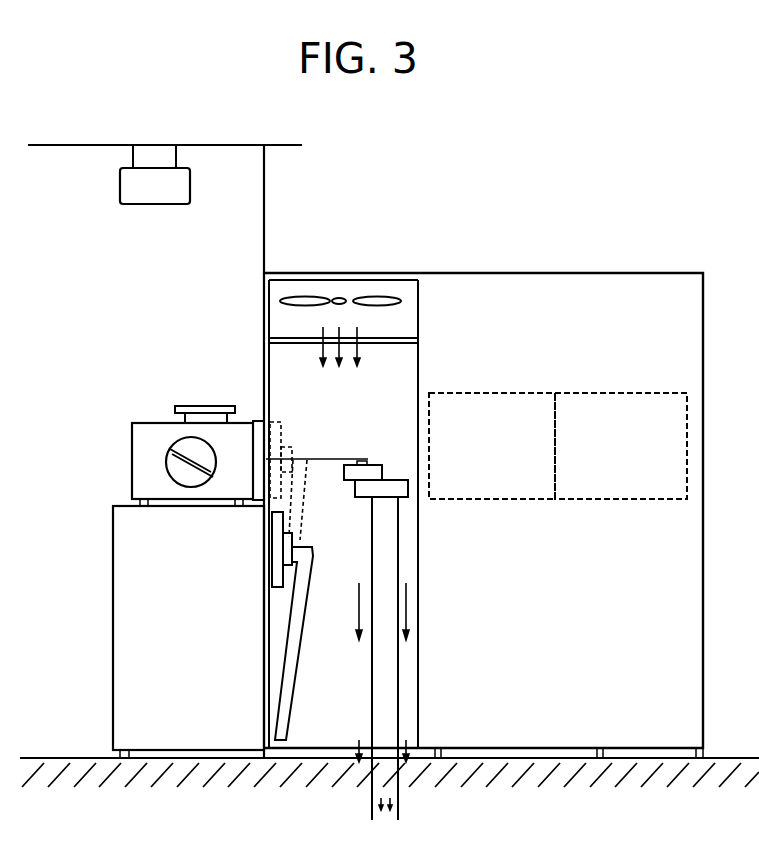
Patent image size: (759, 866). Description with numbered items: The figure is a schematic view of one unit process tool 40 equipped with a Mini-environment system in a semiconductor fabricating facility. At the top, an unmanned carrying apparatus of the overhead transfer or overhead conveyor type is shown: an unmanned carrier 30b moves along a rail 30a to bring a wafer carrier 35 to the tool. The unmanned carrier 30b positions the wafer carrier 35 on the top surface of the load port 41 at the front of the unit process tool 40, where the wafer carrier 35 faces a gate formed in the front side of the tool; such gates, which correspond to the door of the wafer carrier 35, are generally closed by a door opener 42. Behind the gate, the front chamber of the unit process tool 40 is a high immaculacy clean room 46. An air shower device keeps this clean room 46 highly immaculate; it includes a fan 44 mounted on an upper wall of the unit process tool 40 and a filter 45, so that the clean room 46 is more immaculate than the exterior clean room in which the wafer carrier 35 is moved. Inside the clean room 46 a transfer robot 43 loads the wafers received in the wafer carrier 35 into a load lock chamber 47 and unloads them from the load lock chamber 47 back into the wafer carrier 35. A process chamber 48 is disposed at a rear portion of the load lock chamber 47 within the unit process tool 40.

The rail 30a is at (77, 145).
The unmanned carrier 30b is at (120, 186).
The wafer carrier 35 is at (140, 421).
The unit process tool 40 is at (395, 170).
The load port 41 is at (113, 575).
The door opener 42 is at (273, 555).
The transfer robot 43 is at (378, 463).
The fan 44 is at (305, 300).
The filter 45 is at (395, 338).
The clean room 46 is at (349, 422).
The load lock chamber 47 is at (463, 393).
The process chamber 48 is at (625, 393).